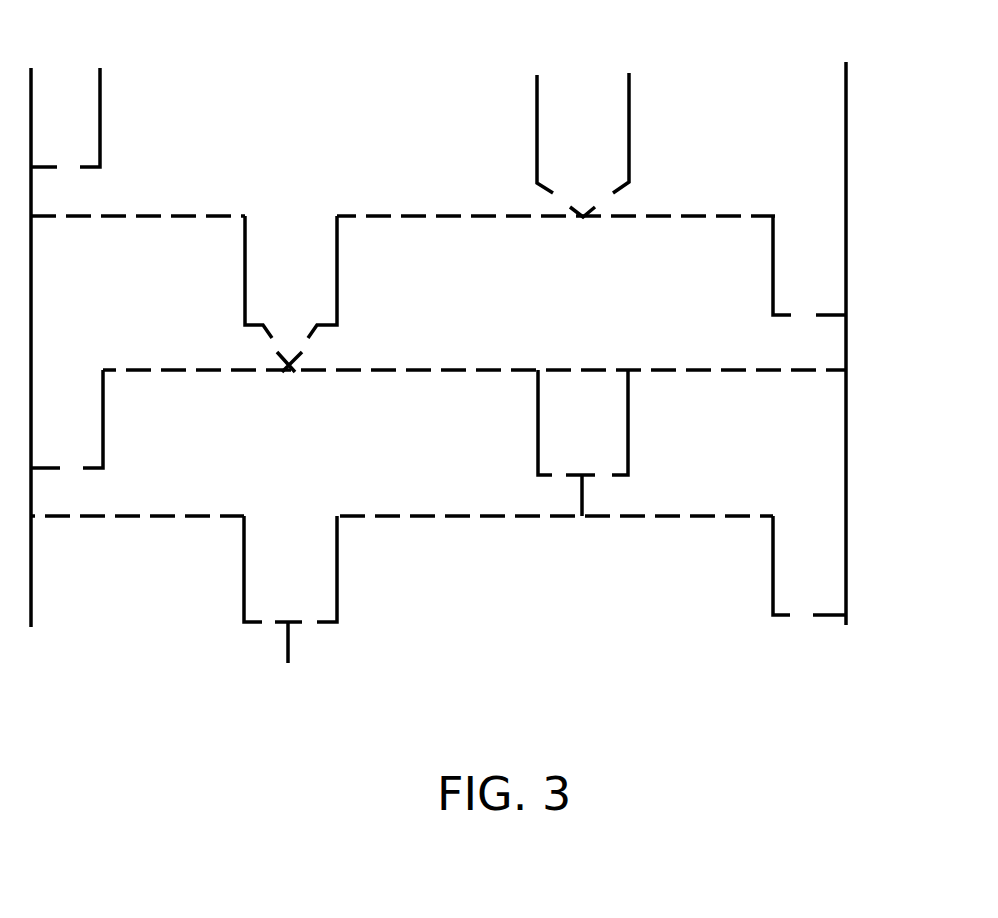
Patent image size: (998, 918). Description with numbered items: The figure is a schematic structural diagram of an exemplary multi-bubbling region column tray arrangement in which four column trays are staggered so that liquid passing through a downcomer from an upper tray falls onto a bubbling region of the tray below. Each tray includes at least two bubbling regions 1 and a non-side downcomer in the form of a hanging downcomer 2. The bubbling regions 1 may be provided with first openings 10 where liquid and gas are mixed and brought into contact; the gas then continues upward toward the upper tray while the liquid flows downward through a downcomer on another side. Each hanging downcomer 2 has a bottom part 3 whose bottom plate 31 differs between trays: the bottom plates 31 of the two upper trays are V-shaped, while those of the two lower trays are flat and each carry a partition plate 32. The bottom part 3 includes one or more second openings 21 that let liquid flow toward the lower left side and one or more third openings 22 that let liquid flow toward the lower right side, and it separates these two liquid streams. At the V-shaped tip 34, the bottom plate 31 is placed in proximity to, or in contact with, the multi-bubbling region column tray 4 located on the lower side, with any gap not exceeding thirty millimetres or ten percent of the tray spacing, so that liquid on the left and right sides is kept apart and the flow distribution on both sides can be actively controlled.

The first openings 10 is at (148, 215).
The bubbling regions 1 is at (450, 207).
The hanging downcomer 2 is at (634, 133).
The bottom part 3 is at (603, 205).
The multi-bubbling region column tray located on a lower side 4 is at (327, 372).
The V-shaped tip 34 is at (287, 372).
The bottom plate 31 is at (565, 476).
The partition plate 32 is at (592, 495).
The second openings 21 is at (268, 610).
The third openings 22 is at (315, 610).